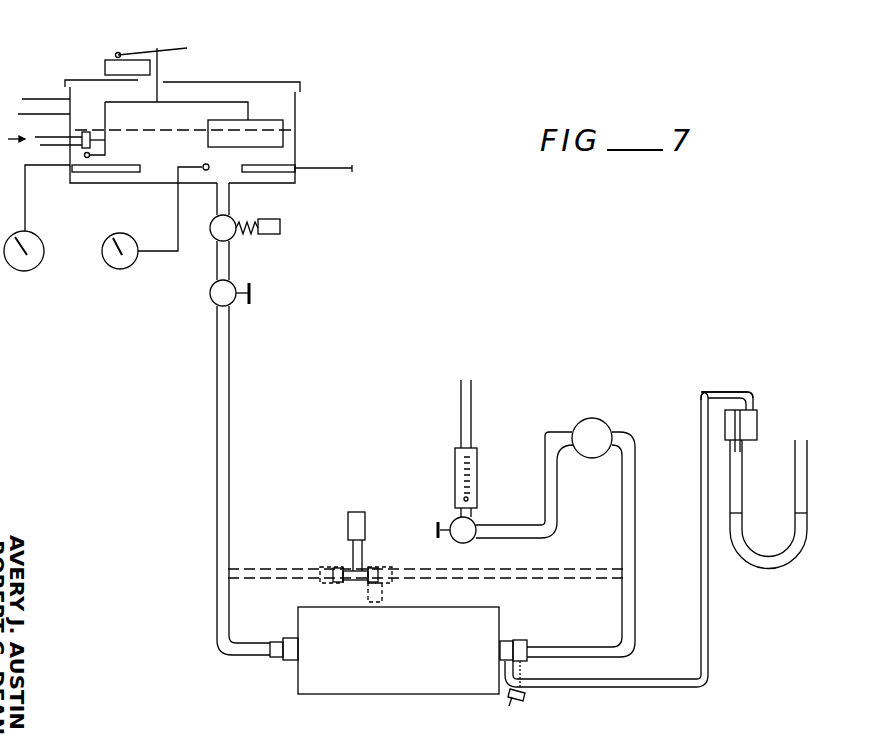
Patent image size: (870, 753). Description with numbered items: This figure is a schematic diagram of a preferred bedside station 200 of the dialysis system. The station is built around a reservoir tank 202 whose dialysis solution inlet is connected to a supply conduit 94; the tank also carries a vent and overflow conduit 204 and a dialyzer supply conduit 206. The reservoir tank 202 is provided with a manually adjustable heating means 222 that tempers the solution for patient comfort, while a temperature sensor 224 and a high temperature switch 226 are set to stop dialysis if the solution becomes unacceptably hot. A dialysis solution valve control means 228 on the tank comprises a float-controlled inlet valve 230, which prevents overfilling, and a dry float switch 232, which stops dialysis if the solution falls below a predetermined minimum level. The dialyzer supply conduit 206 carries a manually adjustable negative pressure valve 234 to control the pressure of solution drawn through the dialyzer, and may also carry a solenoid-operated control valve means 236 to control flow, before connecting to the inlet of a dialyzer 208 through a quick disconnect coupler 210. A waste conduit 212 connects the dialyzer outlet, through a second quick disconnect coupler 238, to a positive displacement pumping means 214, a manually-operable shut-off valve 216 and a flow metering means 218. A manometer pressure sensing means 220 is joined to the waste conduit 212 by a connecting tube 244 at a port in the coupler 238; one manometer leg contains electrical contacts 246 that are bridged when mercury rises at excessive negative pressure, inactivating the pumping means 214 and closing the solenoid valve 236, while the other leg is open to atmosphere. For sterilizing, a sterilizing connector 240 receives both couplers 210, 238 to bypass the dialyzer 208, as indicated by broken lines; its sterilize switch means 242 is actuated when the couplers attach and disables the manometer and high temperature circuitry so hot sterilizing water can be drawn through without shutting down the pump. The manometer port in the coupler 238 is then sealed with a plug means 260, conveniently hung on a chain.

The bedside station 200 is at (300, 71).
The reservoir tank 202 is at (298, 117).
The vent and overflow conduit 204 is at (39, 105).
The supply conduit 94 is at (43, 145).
The float-controlled inlet valve 230 is at (86, 131).
The dialysis solution valve control means 228 is at (138, 103).
The dry float switch 232 is at (107, 62).
The high temperature switch 226 is at (283, 165).
The heating means 222 is at (87, 172).
The temperature sensor 224 is at (178, 219).
The solenoid-operated control valve means 236 is at (233, 238).
The manually adjustable negative pressure valve 234 is at (212, 301).
The dialyzer supply conduit 206 is at (229, 398).
The quick disconnect coupler 210 is at (287, 661).
The sterilizing connector 240 is at (368, 569).
The sterilize switch means 242 is at (364, 522).
The plug means 260 is at (383, 598).
The dialyzer 208 is at (373, 695).
The quick disconnect coupler 238 is at (527, 646).
The waste conduit 212 is at (571, 577).
The positive displacement pumping means 214 is at (605, 425).
The flow metering means 218 is at (478, 462).
The manually-operable shut-off valve 216 is at (470, 539).
The connecting tube 244 is at (708, 605).
The electrical contacts 246 is at (737, 423).
The manometer pressure sensing means 220 is at (791, 556).